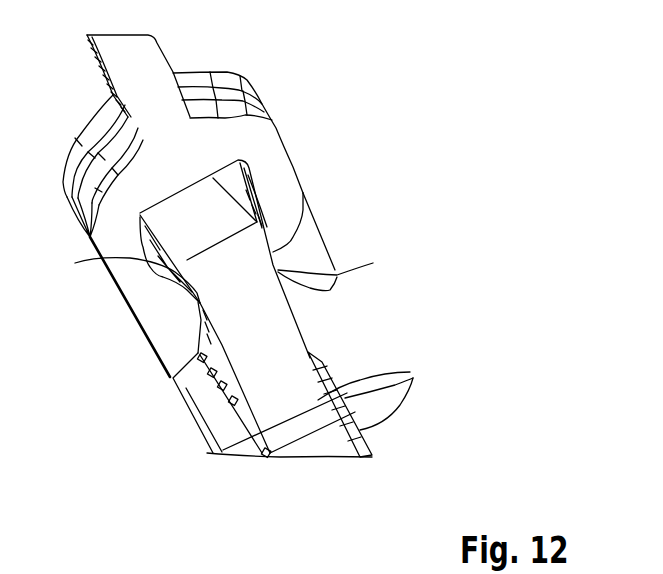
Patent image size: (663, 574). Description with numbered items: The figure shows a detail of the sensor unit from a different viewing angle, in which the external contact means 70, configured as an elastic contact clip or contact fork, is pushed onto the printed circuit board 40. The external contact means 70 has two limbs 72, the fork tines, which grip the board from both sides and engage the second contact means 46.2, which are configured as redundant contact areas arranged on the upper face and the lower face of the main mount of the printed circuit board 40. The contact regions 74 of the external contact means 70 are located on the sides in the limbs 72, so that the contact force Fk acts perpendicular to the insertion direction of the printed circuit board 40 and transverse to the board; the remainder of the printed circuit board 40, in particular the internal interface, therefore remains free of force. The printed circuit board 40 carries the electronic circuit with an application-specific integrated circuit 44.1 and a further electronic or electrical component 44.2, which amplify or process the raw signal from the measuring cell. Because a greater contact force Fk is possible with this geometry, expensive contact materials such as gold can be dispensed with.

The external contact means 70 is at (298, 77).
The limbs 72 is at (147, 298).
The contact regions 74 is at (303, 193).
The second contact means 46.2 is at (224, 273).
The application-specific integrated circuit 44.1 is at (210, 438).
The electronic and/or electrical component 44.2 is at (381, 404).
The printed circuit board 40 is at (372, 479).
The contact force Fk is at (190, 309).